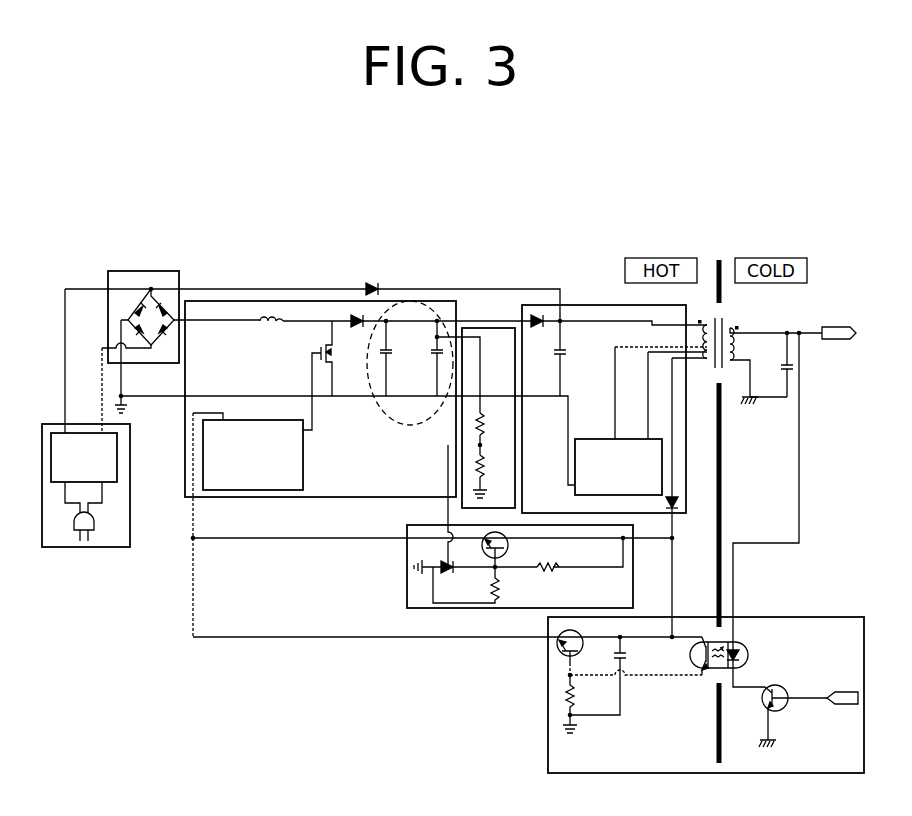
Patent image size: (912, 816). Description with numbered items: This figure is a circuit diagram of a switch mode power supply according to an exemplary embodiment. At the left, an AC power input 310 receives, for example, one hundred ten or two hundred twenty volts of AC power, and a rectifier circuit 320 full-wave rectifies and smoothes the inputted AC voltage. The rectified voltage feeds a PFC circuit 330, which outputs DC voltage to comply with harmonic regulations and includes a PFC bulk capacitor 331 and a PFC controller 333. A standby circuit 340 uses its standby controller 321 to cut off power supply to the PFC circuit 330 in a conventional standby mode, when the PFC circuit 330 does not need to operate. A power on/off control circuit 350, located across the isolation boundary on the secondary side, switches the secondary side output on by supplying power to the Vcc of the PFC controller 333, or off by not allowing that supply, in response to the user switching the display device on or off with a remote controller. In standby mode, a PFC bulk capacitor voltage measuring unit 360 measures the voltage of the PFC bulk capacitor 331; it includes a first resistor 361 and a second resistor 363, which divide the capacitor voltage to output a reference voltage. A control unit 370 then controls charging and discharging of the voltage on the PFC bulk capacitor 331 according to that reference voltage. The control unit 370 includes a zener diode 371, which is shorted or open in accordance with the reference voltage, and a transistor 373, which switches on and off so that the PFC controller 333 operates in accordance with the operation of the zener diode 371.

The alternating current (AC) power input 310 is at (66, 549).
The rectifier circuit 320 is at (136, 271).
The standby controller 321 is at (575, 453).
The PFC circuit 330 is at (205, 300).
The PFC bulk capacitor 331 is at (393, 301).
The PFC controller 333 is at (305, 460).
The standby (STBY) circuit 340 is at (589, 303).
The power on/off control circuit 350 is at (787, 617).
The PFC bulk capacitor voltage measuring unit 360 is at (452, 379).
The first resistor 361 is at (478, 418).
The second resistor 363 is at (478, 460).
The control unit 370 is at (487, 526).
The zener diode 371 is at (437, 558).
The transistor 373 is at (510, 547).